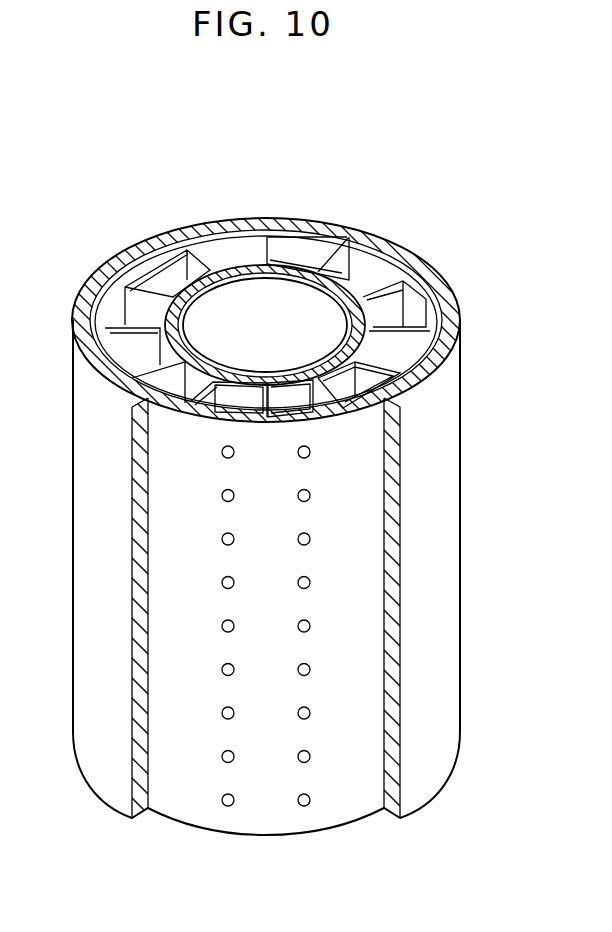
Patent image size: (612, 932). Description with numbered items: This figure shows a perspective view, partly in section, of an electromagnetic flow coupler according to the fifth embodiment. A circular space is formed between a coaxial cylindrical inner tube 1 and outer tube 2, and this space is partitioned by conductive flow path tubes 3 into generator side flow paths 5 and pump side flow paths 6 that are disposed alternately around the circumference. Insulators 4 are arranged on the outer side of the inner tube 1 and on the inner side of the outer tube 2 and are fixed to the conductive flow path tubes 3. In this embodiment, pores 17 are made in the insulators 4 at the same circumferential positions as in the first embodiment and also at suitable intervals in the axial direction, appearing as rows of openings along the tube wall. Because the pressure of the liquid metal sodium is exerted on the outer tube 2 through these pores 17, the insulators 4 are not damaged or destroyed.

The inner tube 1 is at (294, 278).
The outer tube 2 is at (373, 242).
The conductive flow path tube 3 is at (197, 253).
The insulator 4 is at (258, 228).
The generator side flow path 5 is at (410, 350).
The pump side flow path 6 is at (393, 305).
The pore 17 is at (302, 498).